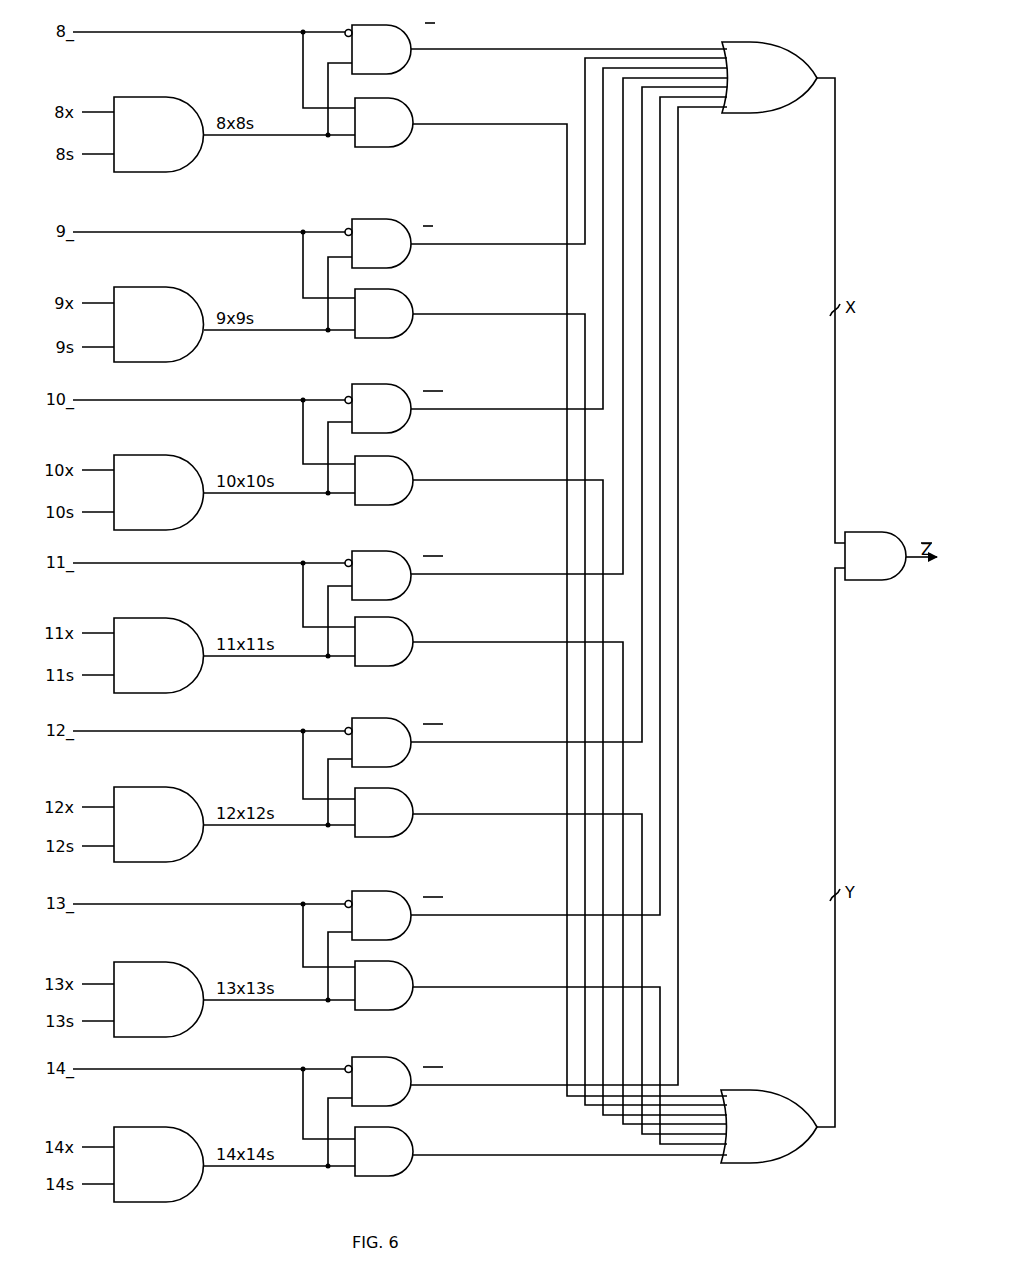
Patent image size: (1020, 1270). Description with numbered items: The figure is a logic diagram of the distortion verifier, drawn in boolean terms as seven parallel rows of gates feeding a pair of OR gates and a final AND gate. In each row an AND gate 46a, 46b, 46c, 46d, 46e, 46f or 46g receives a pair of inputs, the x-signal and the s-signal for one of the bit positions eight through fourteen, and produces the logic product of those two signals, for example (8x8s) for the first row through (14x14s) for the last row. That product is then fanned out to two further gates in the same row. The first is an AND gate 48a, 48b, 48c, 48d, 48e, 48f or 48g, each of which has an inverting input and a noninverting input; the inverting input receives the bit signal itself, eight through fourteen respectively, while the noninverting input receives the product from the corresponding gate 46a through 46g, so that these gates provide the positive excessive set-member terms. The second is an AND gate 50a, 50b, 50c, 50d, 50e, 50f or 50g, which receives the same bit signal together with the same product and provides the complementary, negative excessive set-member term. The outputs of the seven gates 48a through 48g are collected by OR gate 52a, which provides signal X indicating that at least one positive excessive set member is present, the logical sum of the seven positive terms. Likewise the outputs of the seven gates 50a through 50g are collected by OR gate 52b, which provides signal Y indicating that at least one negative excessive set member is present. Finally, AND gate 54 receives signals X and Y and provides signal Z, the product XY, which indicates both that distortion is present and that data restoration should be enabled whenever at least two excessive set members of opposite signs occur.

The AND gate 46a is at (178, 112).
The AND gate 46b is at (178, 302).
The AND gate 46c is at (178, 470).
The AND gate 46d is at (178, 633).
The AND gate 46e is at (178, 802).
The AND gate 46f is at (178, 977).
The AND gate 46g is at (178, 1142).
The AND gate 48a is at (381, 32).
The AND gate 48b is at (398, 223).
The AND gate 48c is at (398, 388).
The AND gate 48d is at (398, 555).
The AND gate 48e is at (398, 722).
The AND gate 48f is at (398, 895).
The AND gate 48g is at (398, 1061).
The AND gate 50a is at (404, 115).
The AND gate 50b is at (403, 305).
The AND gate 50c is at (403, 472).
The AND gate 50d is at (403, 633).
The AND gate 50e is at (403, 804).
The AND gate 50f is at (403, 977).
The AND gate 50g is at (403, 1143).
The OR gate 52a is at (775, 52).
The OR gate 52b is at (772, 1100).
The AND gate 54 is at (880, 540).